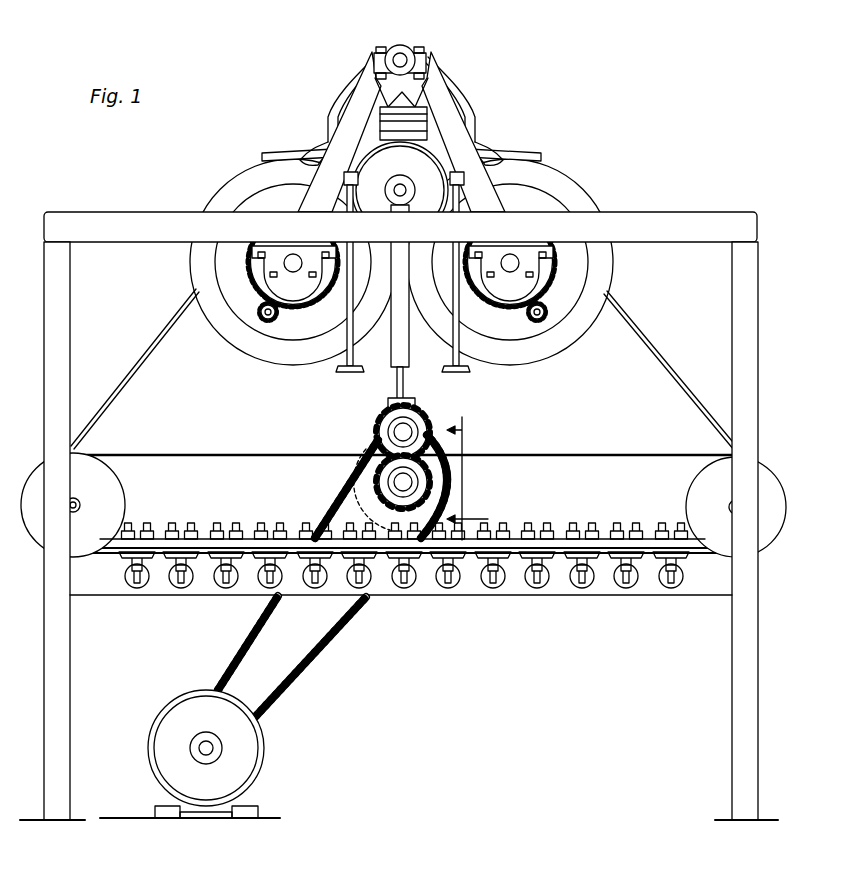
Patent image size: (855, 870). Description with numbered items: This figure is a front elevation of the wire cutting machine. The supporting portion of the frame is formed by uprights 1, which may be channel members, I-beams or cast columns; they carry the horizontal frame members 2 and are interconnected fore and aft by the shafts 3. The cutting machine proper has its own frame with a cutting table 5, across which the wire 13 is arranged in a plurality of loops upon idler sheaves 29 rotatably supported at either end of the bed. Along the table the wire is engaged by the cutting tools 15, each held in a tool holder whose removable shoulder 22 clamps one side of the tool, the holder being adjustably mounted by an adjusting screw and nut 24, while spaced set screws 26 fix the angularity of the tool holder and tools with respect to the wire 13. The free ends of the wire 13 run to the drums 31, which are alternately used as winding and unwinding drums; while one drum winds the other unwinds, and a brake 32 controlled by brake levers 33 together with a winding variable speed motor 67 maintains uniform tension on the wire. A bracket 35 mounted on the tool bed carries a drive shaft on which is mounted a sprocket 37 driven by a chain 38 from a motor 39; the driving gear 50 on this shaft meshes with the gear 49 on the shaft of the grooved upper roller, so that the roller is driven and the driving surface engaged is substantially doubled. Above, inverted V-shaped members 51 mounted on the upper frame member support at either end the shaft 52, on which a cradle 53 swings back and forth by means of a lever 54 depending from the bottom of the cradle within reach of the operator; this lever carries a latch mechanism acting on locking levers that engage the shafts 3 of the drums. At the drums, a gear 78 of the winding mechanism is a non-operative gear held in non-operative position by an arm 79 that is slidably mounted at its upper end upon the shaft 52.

The uprights 1 is at (48, 388).
The horizontal frame members 2 is at (702, 225).
The shafts 3 is at (292, 258).
The cutting table 5 is at (425, 595).
The wire 13 is at (150, 354).
The cutting tool 15 is at (158, 558).
The removable shoulder 22 is at (585, 585).
The nut 24 is at (538, 585).
The set screws 26 is at (130, 522).
The idler sheaves 29 is at (110, 470).
The drums 31 is at (238, 190).
The brake 32 is at (294, 150).
The brake levers 33 is at (347, 372).
The bracket 35 is at (468, 468).
The sprocket 37 is at (437, 498).
The chain 38 is at (255, 635).
The motor 39 is at (198, 698).
The gear 49 is at (390, 425).
The driving gear 50 is at (430, 483).
The inverted V-shaped members 51 is at (360, 131).
The shaft 52 is at (408, 52).
The cradle 53 is at (462, 97).
The lever 54 is at (405, 381).
The winding variable speed motor 67 is at (400, 190).
The gear 78 is at (262, 306).
The arm 79 is at (360, 100).